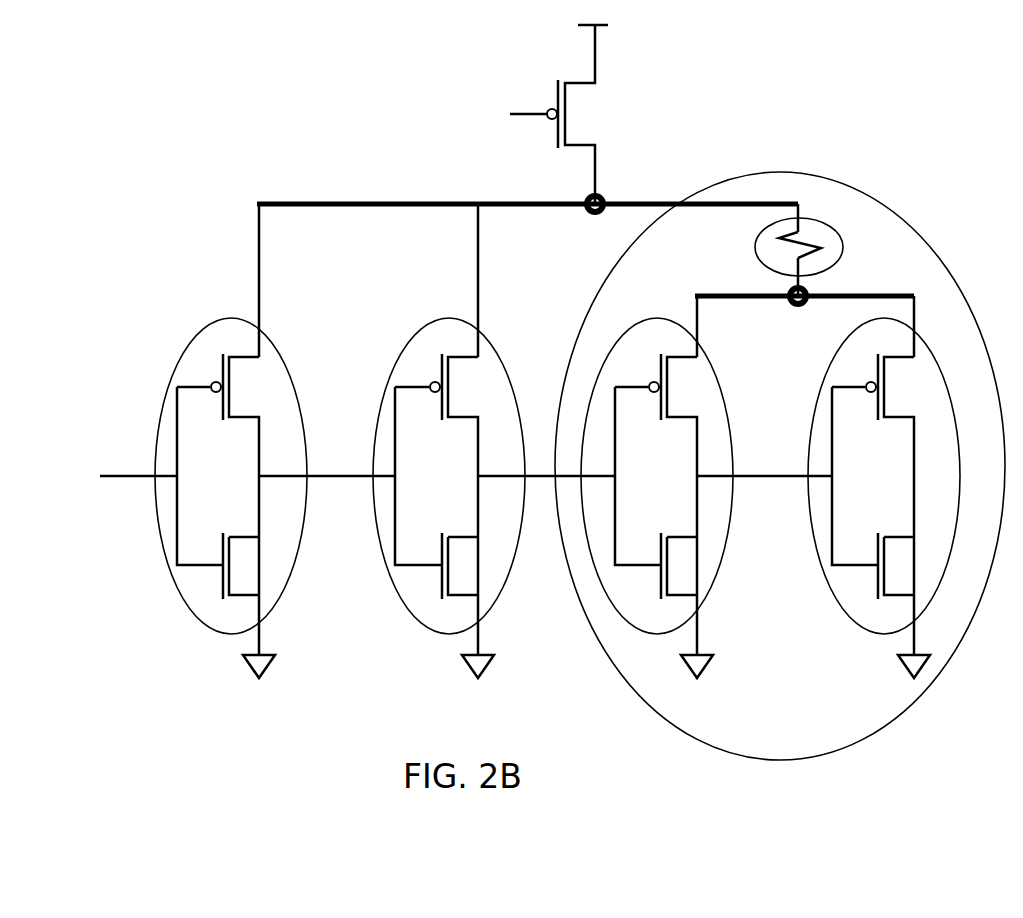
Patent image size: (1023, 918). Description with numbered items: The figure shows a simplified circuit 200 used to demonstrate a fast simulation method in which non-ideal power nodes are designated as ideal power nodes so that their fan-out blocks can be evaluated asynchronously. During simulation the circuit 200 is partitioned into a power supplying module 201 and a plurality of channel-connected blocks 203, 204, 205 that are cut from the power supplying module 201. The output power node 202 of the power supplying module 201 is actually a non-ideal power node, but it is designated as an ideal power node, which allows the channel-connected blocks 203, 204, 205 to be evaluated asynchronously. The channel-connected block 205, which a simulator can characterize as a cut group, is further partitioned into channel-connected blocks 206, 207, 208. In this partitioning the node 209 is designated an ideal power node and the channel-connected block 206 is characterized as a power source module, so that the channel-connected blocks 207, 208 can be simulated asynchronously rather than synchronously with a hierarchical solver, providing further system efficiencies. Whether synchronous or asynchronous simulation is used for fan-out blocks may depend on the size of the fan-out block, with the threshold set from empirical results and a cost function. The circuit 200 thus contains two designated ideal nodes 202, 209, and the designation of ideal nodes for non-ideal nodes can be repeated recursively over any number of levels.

The circuit 200 is at (285, 100).
The power supplying module 201 is at (531, 114).
The power node 202 is at (614, 181).
The channel-connected block 203 is at (217, 498).
The channel-connected block 204 is at (438, 498).
The channel-connected block 205 is at (780, 466).
The channel-connected block 206 is at (820, 247).
The channel-connected block 207 is at (666, 498).
The channel-connected block 208 is at (866, 605).
The node 209 is at (875, 498).